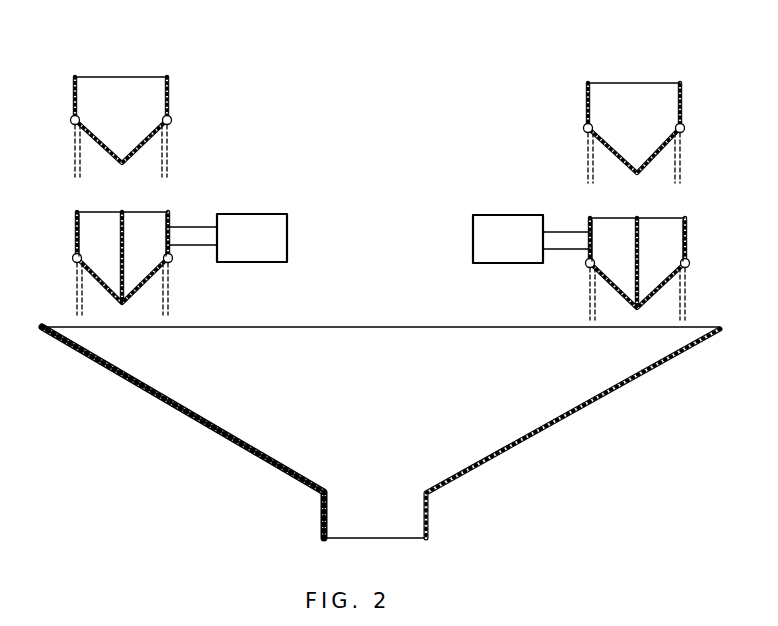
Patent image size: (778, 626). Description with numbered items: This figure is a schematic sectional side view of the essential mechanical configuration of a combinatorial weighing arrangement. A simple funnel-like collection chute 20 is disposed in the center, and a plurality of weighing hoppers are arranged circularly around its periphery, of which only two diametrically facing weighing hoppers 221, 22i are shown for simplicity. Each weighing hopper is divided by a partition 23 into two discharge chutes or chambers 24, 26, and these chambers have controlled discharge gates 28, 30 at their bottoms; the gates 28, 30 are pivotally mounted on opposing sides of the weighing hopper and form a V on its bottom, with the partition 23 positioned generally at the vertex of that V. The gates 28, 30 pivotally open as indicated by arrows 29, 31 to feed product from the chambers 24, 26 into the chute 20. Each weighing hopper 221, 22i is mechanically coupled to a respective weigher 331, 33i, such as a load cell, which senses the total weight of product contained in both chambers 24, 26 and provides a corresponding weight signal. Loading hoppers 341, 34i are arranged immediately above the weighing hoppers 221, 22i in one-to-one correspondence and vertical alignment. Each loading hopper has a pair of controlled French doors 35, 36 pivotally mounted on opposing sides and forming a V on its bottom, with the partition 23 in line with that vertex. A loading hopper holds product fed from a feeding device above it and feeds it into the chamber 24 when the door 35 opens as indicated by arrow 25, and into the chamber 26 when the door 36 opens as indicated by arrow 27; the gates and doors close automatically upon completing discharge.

The collection chute 20 is at (378, 327).
The weighing hopper 221 is at (103, 213).
The weighing hopper 22i is at (621, 219).
The partition 23 is at (127, 230).
The chamber 24 is at (84, 219).
The arrow 25 is at (106, 172).
The chamber 26 is at (176, 221).
The arrow 27 is at (162, 172).
The discharge gate 28 is at (85, 287).
The arrow 29 is at (110, 305).
The discharge gate 30 is at (158, 288).
The arrow 31 is at (160, 305).
The weigher 331 is at (289, 235).
The weigher 33i is at (472, 240).
The loading hopper 341 is at (122, 77).
The loading hopper 34i is at (638, 83).
The French door 35 is at (80, 148).
The French door 36 is at (160, 152).